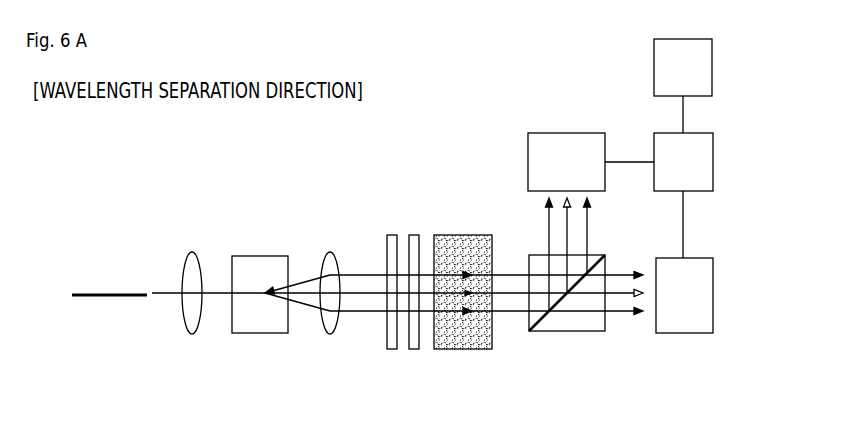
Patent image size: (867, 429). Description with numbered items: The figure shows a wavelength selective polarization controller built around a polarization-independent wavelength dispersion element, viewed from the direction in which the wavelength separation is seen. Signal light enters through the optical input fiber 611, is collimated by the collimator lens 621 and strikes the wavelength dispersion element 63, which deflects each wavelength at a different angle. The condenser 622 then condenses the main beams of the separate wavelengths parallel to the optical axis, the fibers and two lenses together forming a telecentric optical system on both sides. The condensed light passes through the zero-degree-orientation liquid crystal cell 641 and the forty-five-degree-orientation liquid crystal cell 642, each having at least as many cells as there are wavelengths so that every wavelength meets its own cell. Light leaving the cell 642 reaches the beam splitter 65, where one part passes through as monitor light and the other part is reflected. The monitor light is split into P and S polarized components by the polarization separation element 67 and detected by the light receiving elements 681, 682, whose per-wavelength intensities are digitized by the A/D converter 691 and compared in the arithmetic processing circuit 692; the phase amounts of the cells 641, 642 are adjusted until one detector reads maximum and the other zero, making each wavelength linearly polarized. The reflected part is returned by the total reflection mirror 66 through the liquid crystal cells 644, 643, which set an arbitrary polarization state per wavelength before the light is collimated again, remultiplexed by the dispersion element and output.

The optical input fiber 611 is at (91, 243).
The collimator lens 621 is at (190, 257).
The wavelength dispersion element 63 is at (260, 272).
The condenser 622 is at (329, 255).
The 0°-orientation axis liquid crystal cell 641 is at (344, 322).
The 0°-orientation axis liquid crystal cell 644 is at (392, 346).
The 45°-orientation axis liquid crystal cell 642 is at (461, 322).
The 45°-orientation axis liquid crystal cell 643 is at (414, 346).
The total reflection mirror 66 is at (446, 259).
The beam splitter 65 is at (472, 247).
The polarization separation element 67 is at (567, 323).
The light receiving element 681 is at (566, 162).
The light receiving element 682 is at (684, 295).
The A/D converter 691 is at (683, 162).
The arithmetic processing circuit 692 is at (683, 67).